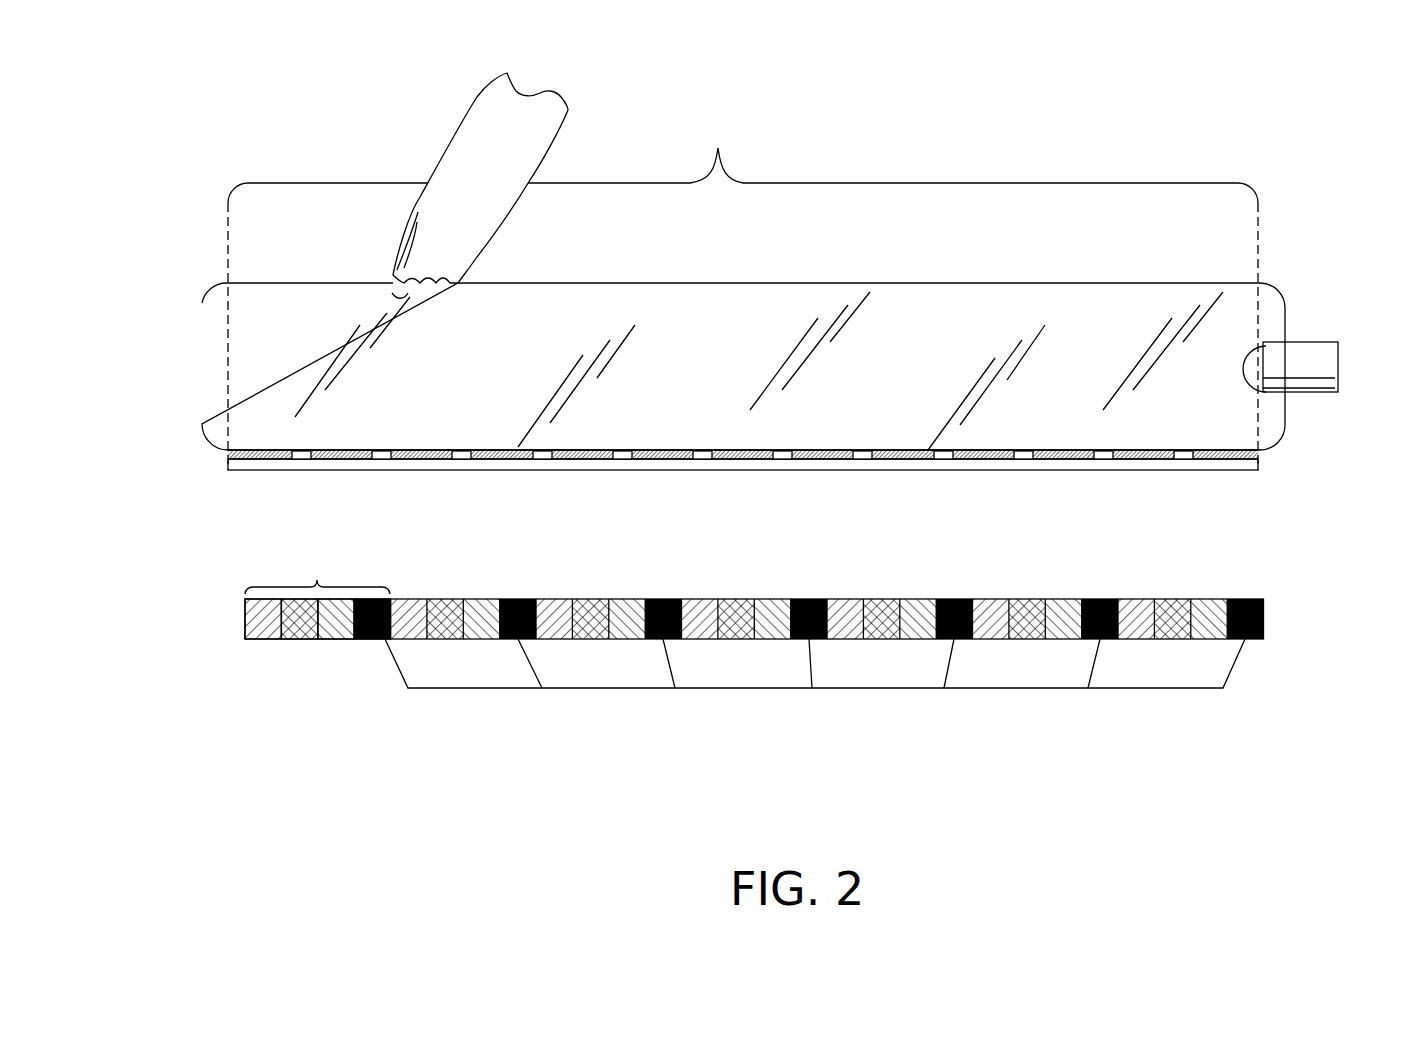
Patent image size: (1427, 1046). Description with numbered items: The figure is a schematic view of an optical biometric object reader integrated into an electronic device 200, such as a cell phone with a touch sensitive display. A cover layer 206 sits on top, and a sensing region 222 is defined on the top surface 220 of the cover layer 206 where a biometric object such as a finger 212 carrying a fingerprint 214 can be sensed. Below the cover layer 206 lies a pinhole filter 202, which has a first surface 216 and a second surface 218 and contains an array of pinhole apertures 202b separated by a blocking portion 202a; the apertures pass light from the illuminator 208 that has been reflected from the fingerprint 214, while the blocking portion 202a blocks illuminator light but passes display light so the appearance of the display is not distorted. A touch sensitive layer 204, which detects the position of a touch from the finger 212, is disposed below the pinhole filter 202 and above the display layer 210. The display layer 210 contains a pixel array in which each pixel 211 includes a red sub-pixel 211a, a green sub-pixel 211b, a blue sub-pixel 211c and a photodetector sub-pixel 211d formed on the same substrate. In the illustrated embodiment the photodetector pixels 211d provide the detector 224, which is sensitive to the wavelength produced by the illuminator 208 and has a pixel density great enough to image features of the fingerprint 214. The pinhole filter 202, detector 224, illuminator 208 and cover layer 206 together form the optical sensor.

The electronic device 200 is at (1188, 137).
The pinhole filter 202 is at (1233, 452).
The blocking portion 202a is at (340, 468).
The pinhole apertures 202b is at (378, 450).
The touch sensitive layer 204 is at (1233, 470).
The cover layer 206 is at (718, 308).
The illuminator 208 is at (1303, 342).
The display layer 210 is at (567, 712).
The pixel 211 is at (317, 580).
The red sub-pixel 211a is at (263, 640).
The green sub-pixel 211b is at (302, 640).
The blue sub-pixel 211c is at (333, 640).
The photodetector sub-pixel 211d is at (368, 640).
The finger 212 is at (463, 132).
The fingerprint 214 is at (392, 293).
The first surface 216 is at (435, 447).
The second surface 218 is at (406, 462).
The top surface 220 is at (1055, 282).
The sensing region 222 is at (717, 146).
The detector 224 is at (757, 690).